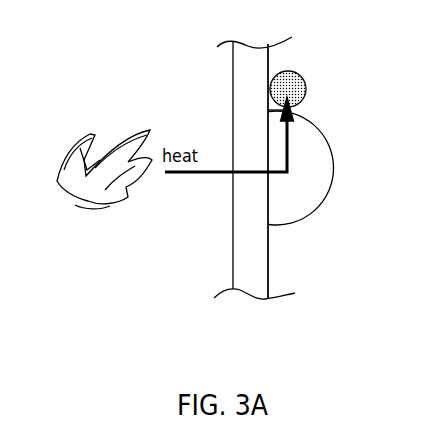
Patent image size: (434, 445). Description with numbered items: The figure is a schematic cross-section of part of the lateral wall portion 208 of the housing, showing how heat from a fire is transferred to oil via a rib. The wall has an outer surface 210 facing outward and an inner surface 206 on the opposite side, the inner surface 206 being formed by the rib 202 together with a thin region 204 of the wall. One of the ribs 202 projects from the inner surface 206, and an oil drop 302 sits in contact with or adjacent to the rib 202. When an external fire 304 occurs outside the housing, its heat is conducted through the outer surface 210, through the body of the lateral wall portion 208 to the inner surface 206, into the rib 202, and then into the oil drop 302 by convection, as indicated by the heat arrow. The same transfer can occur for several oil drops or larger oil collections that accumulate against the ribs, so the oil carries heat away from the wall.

The rib 202 is at (297, 193).
The thin region 204 is at (268, 54).
The inner surface 206 is at (268, 279).
The lateral wall portion 208 is at (247, 219).
The outer surface 210 is at (233, 245).
The oil drop 302 is at (306, 86).
The external fire 304 is at (55, 124).